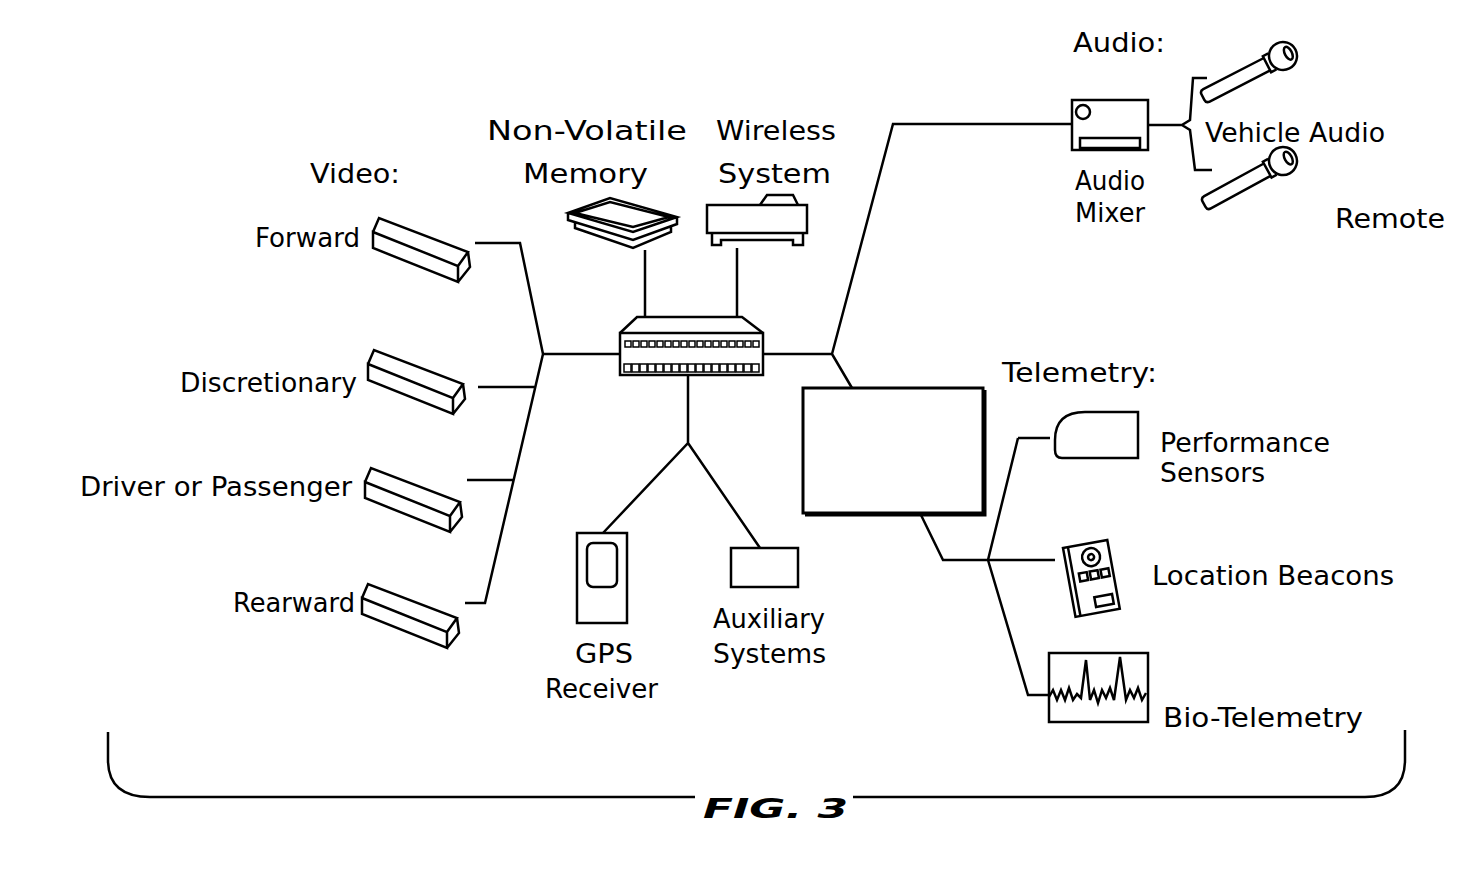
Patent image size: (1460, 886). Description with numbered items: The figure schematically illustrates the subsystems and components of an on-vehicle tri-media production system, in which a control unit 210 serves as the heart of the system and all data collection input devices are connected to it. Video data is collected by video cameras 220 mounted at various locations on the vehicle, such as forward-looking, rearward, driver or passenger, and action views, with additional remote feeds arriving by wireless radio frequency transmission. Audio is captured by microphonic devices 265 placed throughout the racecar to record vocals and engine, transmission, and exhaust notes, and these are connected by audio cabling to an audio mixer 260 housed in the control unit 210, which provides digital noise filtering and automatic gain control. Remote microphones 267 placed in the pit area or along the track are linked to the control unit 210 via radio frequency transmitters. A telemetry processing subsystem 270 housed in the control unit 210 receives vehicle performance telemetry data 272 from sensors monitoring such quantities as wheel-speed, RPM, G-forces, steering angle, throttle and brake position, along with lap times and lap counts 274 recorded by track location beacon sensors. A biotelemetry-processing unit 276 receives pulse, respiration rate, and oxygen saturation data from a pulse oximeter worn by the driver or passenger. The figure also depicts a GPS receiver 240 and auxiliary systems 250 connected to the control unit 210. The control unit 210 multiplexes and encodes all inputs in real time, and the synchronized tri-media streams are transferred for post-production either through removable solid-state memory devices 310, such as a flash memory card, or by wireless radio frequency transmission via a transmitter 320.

The control unit 210 is at (735, 375).
The video camera 220 is at (425, 265).
The GPS receiver 240 is at (595, 533).
The auxiliary systems 250 is at (798, 567).
The audio mixer 260 is at (1072, 112).
The microphonic device 265 is at (1297, 50).
The remote microphone 267 is at (1297, 156).
The telemetry processing subsystem 270 is at (915, 388).
The vehicle performance telemetry data 272 is at (1102, 458).
The lap times and lap counts 274 is at (1117, 595).
The biotelemetry-processing unit 276 is at (1097, 722).
The removable solid-state memory device 310 is at (590, 236).
The transmitter 320 is at (783, 245).